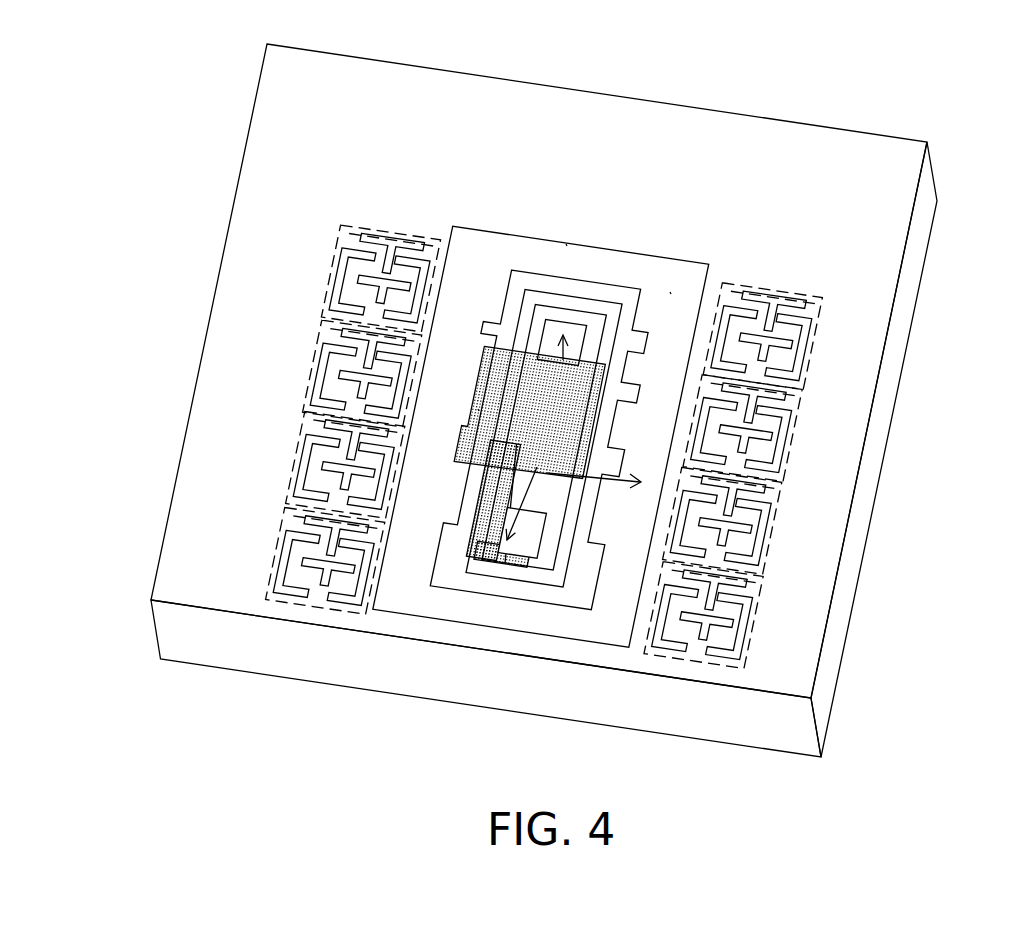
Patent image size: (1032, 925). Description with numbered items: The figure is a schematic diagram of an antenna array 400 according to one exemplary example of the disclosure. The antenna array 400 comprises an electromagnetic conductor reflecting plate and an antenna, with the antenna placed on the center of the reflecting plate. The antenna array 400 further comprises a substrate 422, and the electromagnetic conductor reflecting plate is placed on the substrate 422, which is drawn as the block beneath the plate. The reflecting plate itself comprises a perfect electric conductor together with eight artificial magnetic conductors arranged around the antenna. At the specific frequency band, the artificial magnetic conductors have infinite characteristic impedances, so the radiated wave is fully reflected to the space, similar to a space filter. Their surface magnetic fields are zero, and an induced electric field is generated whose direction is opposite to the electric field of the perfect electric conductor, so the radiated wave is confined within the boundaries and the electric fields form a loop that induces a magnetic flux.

The antenna array 400 is at (970, 810).
The substrate 422 is at (910, 273).